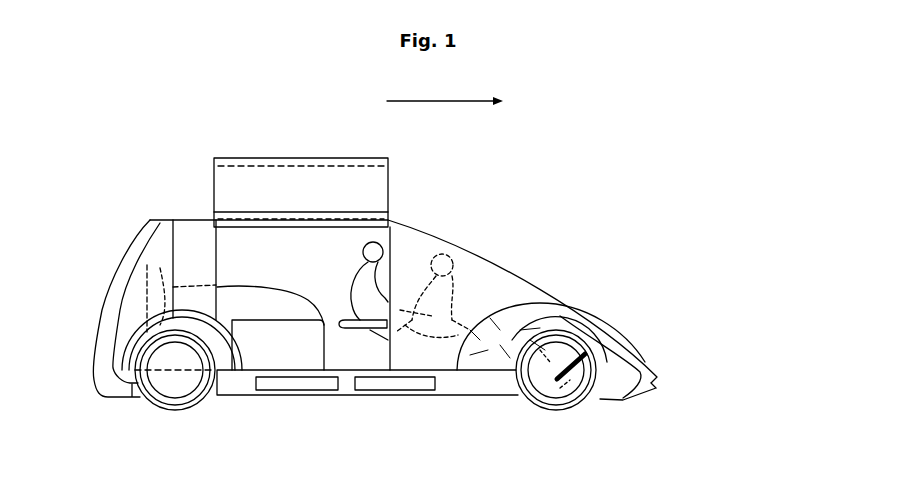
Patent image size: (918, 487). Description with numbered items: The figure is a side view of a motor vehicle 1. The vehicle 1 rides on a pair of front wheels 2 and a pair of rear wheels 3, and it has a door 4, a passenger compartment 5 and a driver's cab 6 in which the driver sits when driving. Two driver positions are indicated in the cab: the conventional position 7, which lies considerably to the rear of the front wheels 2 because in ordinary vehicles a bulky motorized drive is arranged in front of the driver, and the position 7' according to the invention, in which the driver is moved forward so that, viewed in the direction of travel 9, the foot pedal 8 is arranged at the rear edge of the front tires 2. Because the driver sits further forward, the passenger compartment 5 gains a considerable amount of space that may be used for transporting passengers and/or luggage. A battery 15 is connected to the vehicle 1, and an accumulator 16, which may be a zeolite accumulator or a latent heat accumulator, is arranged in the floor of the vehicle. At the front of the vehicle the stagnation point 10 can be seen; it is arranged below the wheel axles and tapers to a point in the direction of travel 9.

The motor vehicle 1 is at (632, 160).
The front wheel 2 is at (545, 387).
The rear wheel 3 is at (198, 402).
The door 4 is at (290, 183).
The passenger compartment 5 is at (233, 263).
The driver's cab 6 is at (495, 283).
The driver position 7 is at (386, 260).
The driver position 7' is at (445, 260).
The foot pedal 8 is at (578, 398).
The direction of travel 9 is at (445, 92).
The stagnation point 10 is at (672, 382).
The battery 15 is at (287, 392).
The accumulator 16 is at (373, 392).